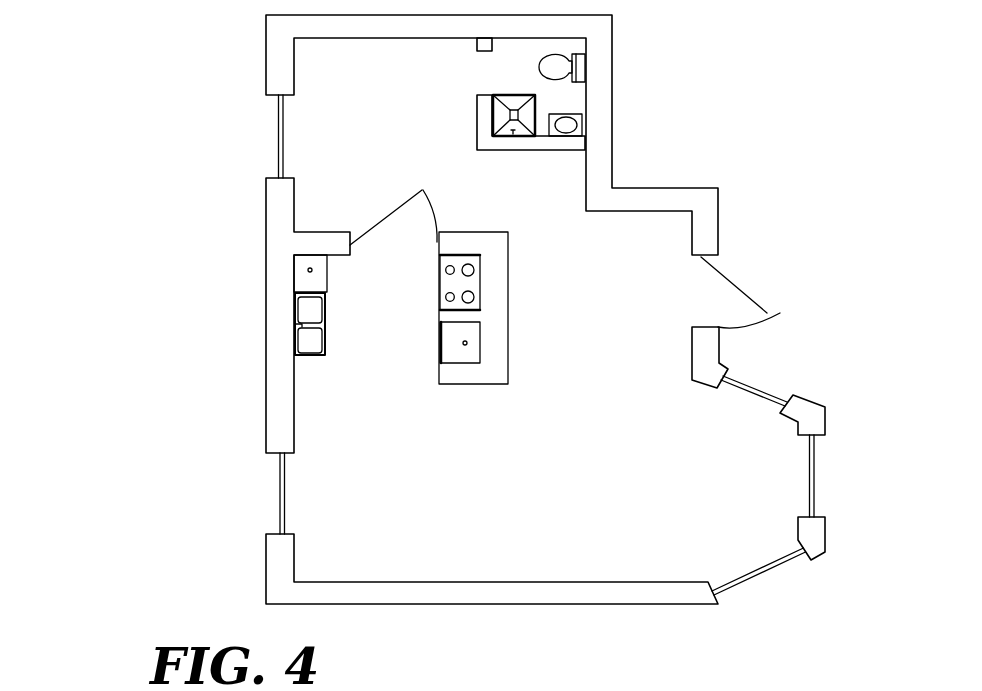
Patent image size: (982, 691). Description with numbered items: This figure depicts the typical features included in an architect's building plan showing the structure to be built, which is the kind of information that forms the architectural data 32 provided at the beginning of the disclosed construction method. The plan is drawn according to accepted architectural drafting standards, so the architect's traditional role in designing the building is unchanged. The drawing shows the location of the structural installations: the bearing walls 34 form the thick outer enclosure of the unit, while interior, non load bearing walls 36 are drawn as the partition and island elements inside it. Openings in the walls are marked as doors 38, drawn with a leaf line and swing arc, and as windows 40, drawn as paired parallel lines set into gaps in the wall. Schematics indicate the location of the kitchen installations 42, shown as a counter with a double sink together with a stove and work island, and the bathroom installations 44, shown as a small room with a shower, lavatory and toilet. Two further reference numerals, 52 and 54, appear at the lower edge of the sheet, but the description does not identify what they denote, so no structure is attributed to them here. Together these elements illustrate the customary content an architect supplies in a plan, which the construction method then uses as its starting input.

The architectural data 32 is at (182, 463).
The bearing walls 34 is at (267, 392).
The interior, non load bearing walls 36 is at (512, 375).
The doors 38 is at (362, 233).
The windows 40 is at (278, 158).
The kitchen installations 42 is at (305, 316).
The bathroom installations 44 is at (550, 81).
The component 52 is at (492, 679).
The component 54 is at (418, 680).